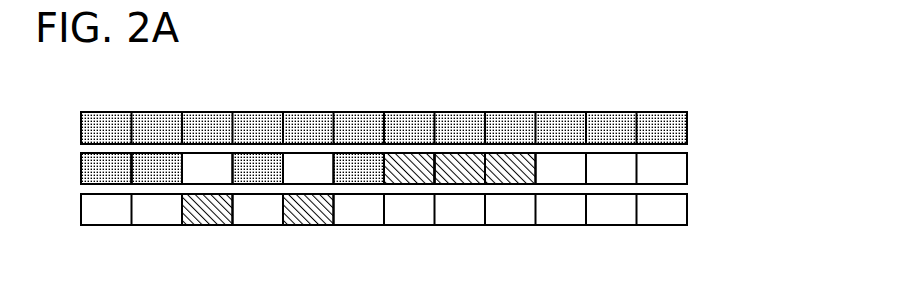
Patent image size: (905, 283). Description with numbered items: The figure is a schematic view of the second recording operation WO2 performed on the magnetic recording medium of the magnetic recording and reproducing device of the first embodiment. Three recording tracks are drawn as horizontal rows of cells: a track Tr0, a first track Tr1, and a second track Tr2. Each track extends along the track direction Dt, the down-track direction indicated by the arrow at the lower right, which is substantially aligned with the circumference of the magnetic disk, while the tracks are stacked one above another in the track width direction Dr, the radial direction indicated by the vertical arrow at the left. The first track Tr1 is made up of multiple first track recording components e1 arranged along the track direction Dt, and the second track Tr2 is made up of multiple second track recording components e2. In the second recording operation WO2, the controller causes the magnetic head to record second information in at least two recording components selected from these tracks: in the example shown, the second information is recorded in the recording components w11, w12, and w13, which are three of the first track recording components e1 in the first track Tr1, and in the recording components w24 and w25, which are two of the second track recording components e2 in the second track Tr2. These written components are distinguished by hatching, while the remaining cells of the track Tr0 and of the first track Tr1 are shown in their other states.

The first track recording components e1 is at (408, 170).
The second track recording components e2 is at (206, 170).
The recording component w11 is at (508, 170).
The recording component w12 is at (458, 170).
The recording component w13 is at (408, 170).
The recording component w24 is at (307, 170).
The recording component w25 is at (206, 170).
The track Tr0 is at (688, 130).
The first track Tr1 is at (688, 170).
The second track Tr2 is at (688, 209).
The second recording operation WO2 is at (813, 100).
The track width direction Dr is at (58, 112).
The track direction Dt is at (695, 237).